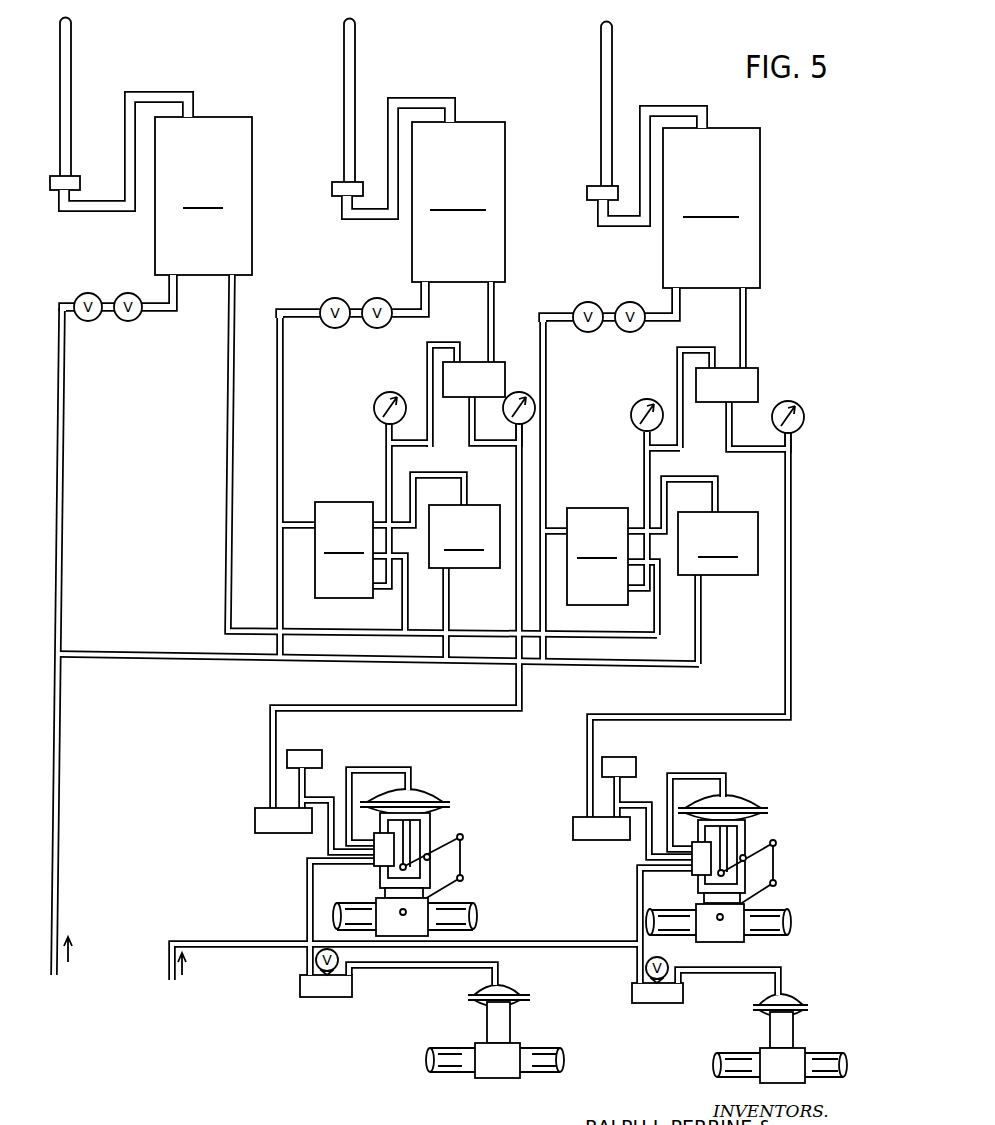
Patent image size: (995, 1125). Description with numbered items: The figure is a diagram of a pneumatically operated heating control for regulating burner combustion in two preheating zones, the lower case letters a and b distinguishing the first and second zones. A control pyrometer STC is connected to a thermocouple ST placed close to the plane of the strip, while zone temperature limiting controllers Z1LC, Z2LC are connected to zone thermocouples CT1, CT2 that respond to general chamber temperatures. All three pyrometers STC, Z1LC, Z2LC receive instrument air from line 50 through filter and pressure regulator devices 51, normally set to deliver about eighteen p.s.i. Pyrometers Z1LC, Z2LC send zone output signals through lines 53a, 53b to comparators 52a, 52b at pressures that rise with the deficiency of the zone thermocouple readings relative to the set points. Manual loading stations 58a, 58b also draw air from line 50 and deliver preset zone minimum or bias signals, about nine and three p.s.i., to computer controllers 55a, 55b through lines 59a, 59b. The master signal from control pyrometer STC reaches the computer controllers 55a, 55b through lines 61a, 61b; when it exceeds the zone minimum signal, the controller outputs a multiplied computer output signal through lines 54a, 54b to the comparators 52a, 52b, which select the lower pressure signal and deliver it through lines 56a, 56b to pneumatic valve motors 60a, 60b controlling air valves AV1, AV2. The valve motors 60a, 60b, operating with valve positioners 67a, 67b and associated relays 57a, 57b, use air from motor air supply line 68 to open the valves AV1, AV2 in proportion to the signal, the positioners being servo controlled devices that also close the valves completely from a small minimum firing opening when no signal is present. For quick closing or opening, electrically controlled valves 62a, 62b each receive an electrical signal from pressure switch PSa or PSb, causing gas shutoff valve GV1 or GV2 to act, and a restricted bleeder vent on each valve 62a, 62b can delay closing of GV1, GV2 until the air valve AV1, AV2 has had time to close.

The instrument air line 50 is at (60, 827).
The filter and pressure regulator devices 51 is at (93, 321).
The comparator 52a is at (750, 386).
The comparator 52b is at (497, 367).
The zone output signal line 53a is at (748, 311).
The zone output signal line 53b is at (496, 298).
The computer output signal line 54a is at (676, 357).
The computer output signal line 54b is at (427, 355).
The computer controller 55a is at (597, 556).
The computer controller 55b is at (344, 550).
The comparator output line 56a is at (725, 432).
The comparator output line 56b is at (470, 430).
The relay 57a is at (595, 838).
The relay 57b is at (278, 831).
The manual loading station 58a is at (718, 543).
The manual loading station 58b is at (464, 536).
The zone minimum signal line 59a is at (719, 485).
The zone minimum signal line 59b is at (459, 483).
The pneumatic valve motor 60a is at (750, 800).
The pneumatic valve motor 60b is at (432, 793).
The master signal line 61a is at (655, 617).
The master signal line 61b is at (402, 610).
The electrically controlled valve 62a is at (647, 1003).
The electrically controlled valve 62b is at (320, 998).
The valve positioner 67a is at (697, 866).
The valve positioner 67b is at (380, 860).
The motor air supply line 68 is at (230, 947).
The thermocouple ST is at (72, 34).
The control pyrometer STC is at (406, 376).
The zone thermocouple CT1 is at (612, 45).
The zone thermocouple CT2 is at (355, 42).
The zone temperature limiting controller Z1LC is at (651, 394).
The zone temperature limiting controller Z2LC is at (392, 389).
The pressure switch PSa is at (625, 757).
The pressure switch PSb is at (315, 750).
The air valve AV1 is at (732, 938).
The air valve AV2 is at (400, 925).
The gas shutoff valve GV1 is at (788, 1053).
The gas shutoff valve GV2 is at (515, 1045).